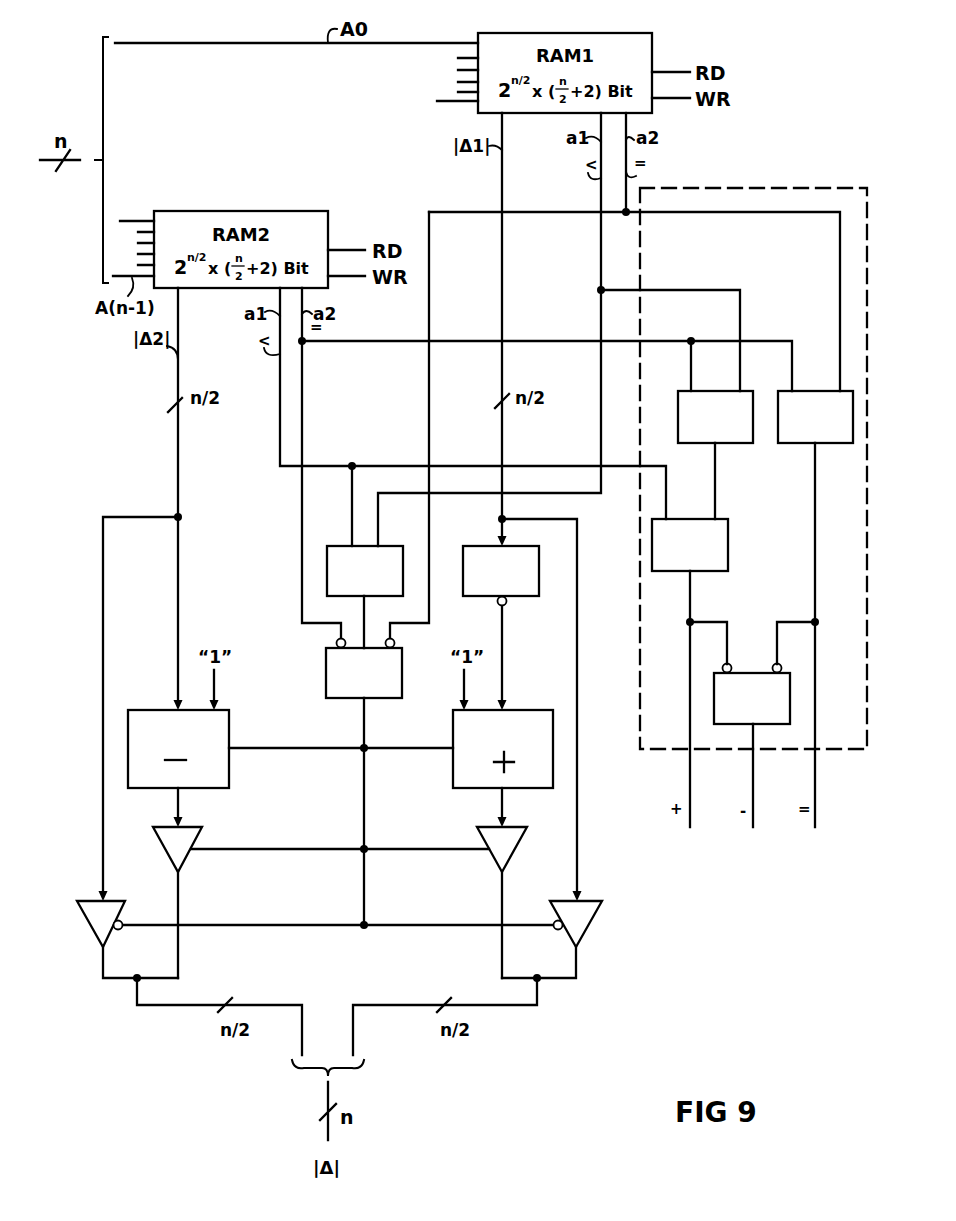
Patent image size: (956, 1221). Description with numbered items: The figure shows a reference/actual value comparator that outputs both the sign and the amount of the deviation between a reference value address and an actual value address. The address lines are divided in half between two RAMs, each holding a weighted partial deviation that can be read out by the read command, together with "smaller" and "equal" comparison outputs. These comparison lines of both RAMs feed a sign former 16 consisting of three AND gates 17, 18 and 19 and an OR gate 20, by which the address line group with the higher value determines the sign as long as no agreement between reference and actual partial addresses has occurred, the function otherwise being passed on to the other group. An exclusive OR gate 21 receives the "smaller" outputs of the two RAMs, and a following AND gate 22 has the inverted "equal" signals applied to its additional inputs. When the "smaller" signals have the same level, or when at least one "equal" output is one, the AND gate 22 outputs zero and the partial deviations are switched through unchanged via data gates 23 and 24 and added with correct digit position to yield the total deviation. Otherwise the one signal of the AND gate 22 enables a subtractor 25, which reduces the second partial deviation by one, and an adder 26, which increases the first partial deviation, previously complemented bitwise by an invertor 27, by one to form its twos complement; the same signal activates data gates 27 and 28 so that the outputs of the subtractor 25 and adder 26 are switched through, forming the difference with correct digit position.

The sign former 16 is at (785, 188).
The AND gate 17 is at (735, 446).
The AND gate 18 is at (835, 446).
The AND gate 19 is at (753, 673).
The OR gate 20 is at (728, 546).
The exclusive OR (XOR) gate 21 is at (346, 546).
The AND gate 22 is at (402, 686).
The data gate 23 is at (93, 925).
The data gate 24 is at (590, 932).
The subtractor 25 is at (229, 763).
The adder 26 is at (453, 790).
The invertor 27 is at (490, 546).
The data gate 28 is at (512, 856).